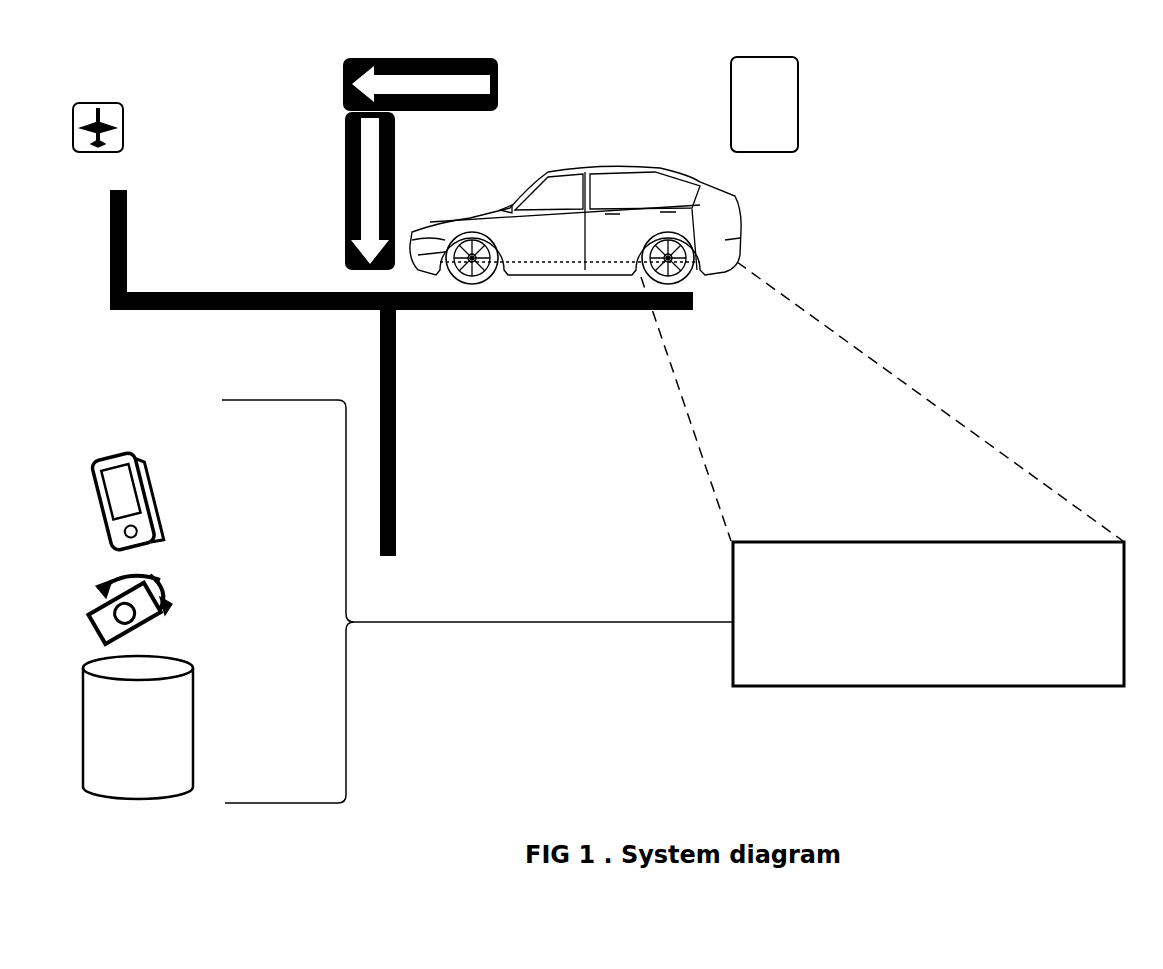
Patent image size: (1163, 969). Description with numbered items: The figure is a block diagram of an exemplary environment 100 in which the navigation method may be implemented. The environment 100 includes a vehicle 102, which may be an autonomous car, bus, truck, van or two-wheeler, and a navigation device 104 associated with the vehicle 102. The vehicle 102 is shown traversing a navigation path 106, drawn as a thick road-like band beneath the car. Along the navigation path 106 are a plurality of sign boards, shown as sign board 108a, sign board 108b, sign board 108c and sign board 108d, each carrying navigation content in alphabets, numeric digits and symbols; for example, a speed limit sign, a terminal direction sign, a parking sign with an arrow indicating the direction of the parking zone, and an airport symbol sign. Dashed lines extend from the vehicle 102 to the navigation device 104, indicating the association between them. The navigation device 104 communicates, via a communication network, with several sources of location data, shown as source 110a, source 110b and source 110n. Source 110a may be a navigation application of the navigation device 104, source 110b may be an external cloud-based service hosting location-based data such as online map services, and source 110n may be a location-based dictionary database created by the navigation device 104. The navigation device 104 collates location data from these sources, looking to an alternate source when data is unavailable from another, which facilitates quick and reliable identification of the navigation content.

The environment 100 is at (1054, 160).
The vehicle 102 is at (573, 165).
The navigation device 104 is at (928, 614).
The navigation path 106 is at (443, 310).
The sign board 108a is at (798, 136).
The sign board 108b is at (460, 60).
The sign board 108c is at (345, 165).
The sign board 108d is at (122, 104).
The source 110a is at (146, 471).
The source 110b is at (178, 600).
The source 110n is at (192, 703).